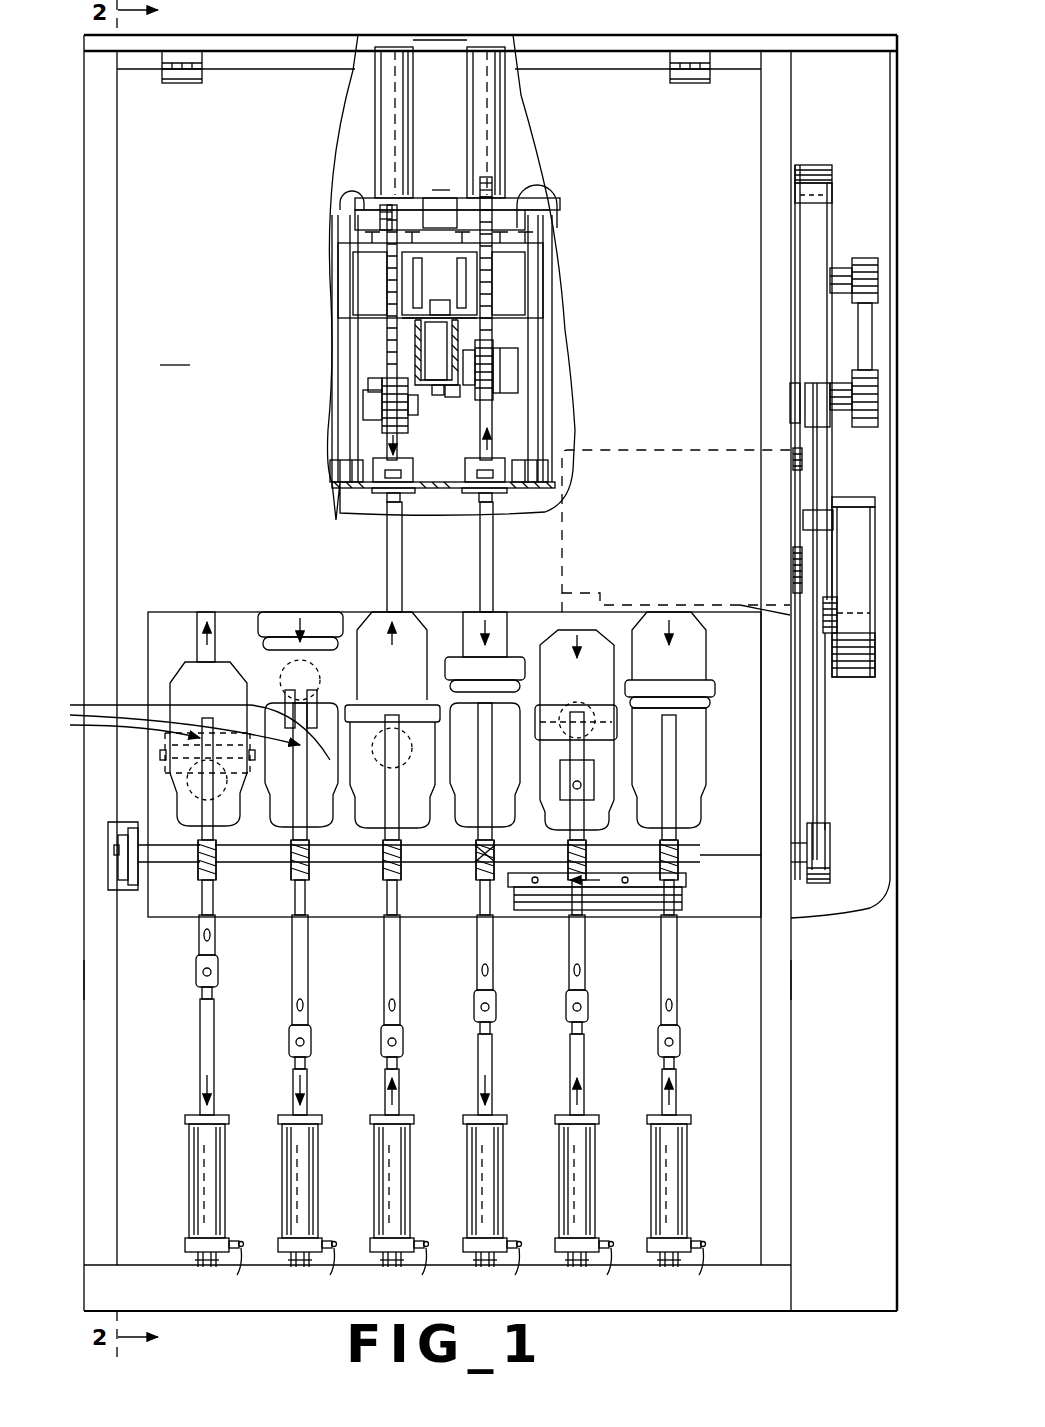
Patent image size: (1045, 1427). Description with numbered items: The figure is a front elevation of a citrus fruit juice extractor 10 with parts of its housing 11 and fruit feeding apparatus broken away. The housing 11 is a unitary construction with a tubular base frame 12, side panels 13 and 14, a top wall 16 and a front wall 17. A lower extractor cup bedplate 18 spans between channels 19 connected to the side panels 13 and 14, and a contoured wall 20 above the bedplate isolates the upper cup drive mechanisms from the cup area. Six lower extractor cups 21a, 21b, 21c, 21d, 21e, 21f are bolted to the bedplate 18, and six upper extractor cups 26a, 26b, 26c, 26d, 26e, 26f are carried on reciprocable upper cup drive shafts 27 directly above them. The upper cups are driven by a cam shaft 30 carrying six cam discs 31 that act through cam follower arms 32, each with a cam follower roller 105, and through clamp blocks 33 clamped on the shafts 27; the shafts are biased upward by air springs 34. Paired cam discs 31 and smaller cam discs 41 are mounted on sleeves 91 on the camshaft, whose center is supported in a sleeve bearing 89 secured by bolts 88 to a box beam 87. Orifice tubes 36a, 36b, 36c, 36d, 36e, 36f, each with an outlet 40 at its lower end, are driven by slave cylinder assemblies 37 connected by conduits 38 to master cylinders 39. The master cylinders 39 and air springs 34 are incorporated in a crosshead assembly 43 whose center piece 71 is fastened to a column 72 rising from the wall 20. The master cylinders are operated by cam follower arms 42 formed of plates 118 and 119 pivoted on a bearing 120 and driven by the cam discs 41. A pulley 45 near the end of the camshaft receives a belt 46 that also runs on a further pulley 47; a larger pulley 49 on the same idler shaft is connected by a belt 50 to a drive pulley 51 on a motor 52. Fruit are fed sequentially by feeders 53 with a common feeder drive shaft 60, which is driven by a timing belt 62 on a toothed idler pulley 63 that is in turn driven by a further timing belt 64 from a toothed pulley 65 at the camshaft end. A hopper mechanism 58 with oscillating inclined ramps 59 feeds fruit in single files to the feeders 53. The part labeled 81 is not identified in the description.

The citrus fruit juice extractor 10 is at (760, 30).
The housing 11 is at (876, 40).
The base frame 12 is at (100, 1288).
The side panel 13 is at (84, 980).
The side panel 14 is at (782, 969).
The top wall 16 is at (508, 40).
The front wall 17 is at (176, 352).
The lower extractor cup bedplate 18 is at (188, 897).
The channels 19 is at (125, 787).
The contoured wall 20 is at (345, 498).
The lower extractor cup 21a is at (178, 742).
The lower extractor cup 21b is at (285, 790).
The lower extractor cup 21c is at (375, 790).
The lower extractor cup 21d is at (465, 790).
The lower extractor cup 21e is at (576, 792).
The lower extractor cup 21f is at (669, 781).
The upper extractor cup 26a is at (230, 696).
The upper extractor cup 26b is at (318, 628).
The upper extractor cup 26c is at (415, 684).
The upper extractor cup 26d is at (485, 637).
The upper extractor cup 26e is at (598, 630).
The upper extractor cup 26f is at (672, 612).
The upper cup drive shaft 27 is at (485, 520).
The cam shaft 30 is at (560, 293).
The cam disc 31 is at (386, 205).
The cam follower arm 32 is at (362, 398).
The clamp block 33 is at (380, 400).
The air spring 34 is at (468, 46).
The orifice tube 36a is at (199, 932).
The orifice tube 36b is at (292, 979).
The orifice tube 36c is at (384, 945).
The orifice tube 36d is at (477, 945).
The orifice tube 36e is at (585, 940).
The orifice tube 36f is at (677, 971).
The slave cylinder assembly 37 is at (212, 1162).
The conduit 38 is at (330, 1270).
The master cylinder 39 is at (352, 199).
The outlet 40 is at (210, 937).
The cam disc 41 is at (370, 290).
The cam follower arm 42 is at (328, 455).
The crosshead assembly 43 is at (380, 220).
The pulley 45 is at (828, 170).
The belt 46 is at (822, 210).
The pulley 47 is at (746, 597).
The pulley 49 is at (872, 683).
The belt 50 is at (860, 580).
The drive pulley 51 is at (872, 497).
The motor 52 is at (648, 448).
The sequential feeder 53 is at (833, 751).
The hopper mechanism 58 is at (468, 860).
The ramp 59 is at (570, 875).
The feeder drive shaft 60 is at (362, 867).
The timing belt 62 is at (826, 727).
The toothed idler pulley 63 is at (858, 425).
The timing belt 64 is at (866, 336).
The toothed pulley 65 is at (876, 262).
The center piece 71 is at (445, 200).
The column 72 is at (447, 490).
The guide column 81 is at (467, 84).
The box beam 87 is at (418, 340).
The bolt 88 is at (432, 352).
The sleeve bearing 89 is at (405, 273).
The sleeve 91 is at (365, 262).
The cam follower roller 105 is at (372, 398).
The plate 118 is at (352, 465).
The plate 119 is at (332, 320).
The bearing 120 is at (338, 492).